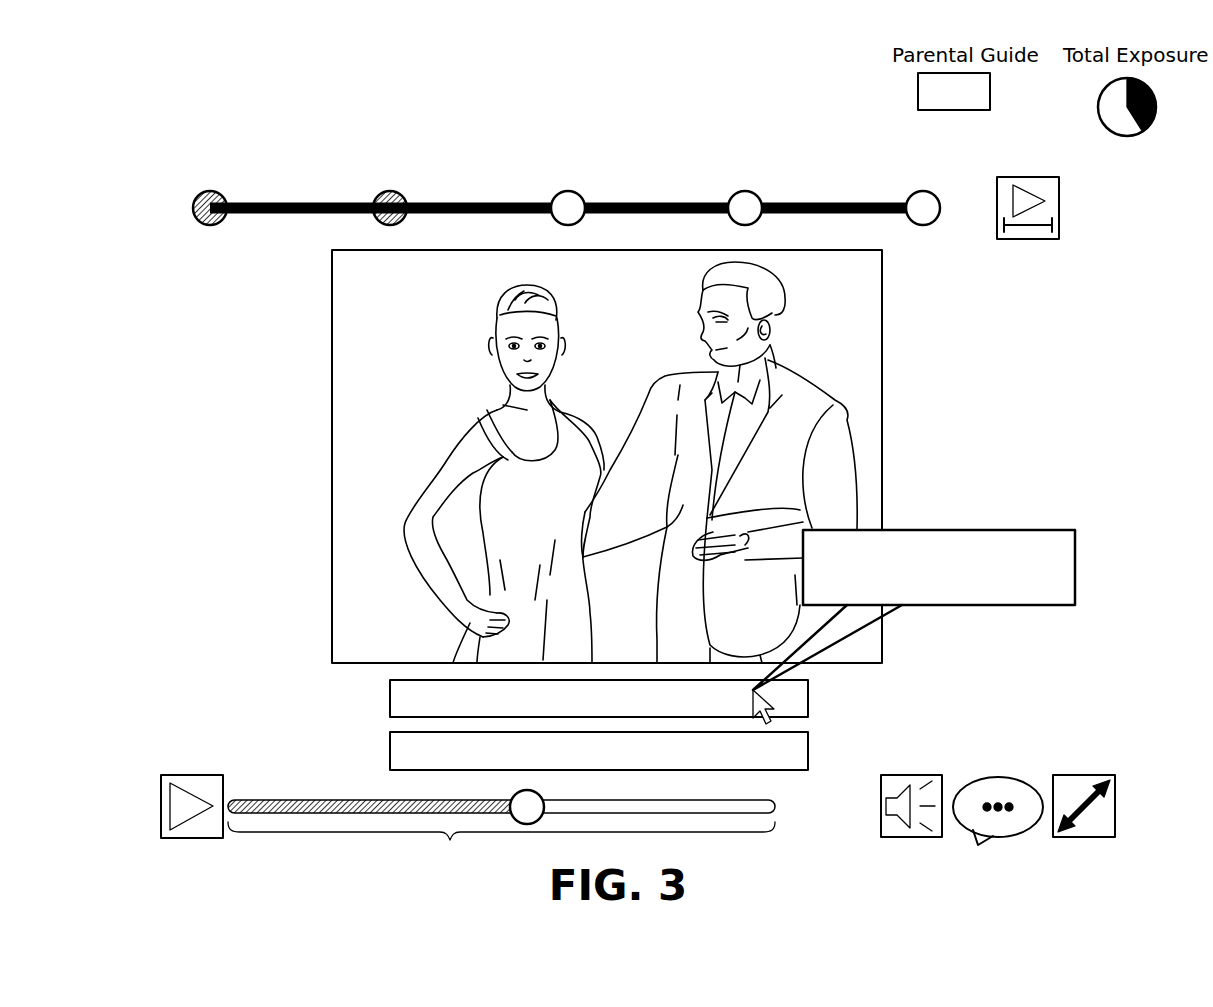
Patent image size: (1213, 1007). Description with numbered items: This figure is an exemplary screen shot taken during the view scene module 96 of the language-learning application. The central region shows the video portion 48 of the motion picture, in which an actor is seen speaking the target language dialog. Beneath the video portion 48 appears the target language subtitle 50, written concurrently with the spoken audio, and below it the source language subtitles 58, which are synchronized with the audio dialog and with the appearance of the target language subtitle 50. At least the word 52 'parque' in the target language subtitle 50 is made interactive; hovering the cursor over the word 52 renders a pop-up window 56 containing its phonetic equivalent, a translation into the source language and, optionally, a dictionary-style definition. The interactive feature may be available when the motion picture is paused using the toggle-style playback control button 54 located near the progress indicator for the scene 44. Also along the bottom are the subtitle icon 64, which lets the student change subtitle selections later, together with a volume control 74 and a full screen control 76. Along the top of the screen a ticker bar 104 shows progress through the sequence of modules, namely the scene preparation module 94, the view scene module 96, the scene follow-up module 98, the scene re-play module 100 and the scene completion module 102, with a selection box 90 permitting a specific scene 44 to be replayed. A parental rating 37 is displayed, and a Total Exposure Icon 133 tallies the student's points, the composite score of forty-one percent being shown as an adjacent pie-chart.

The parental rating 37 is at (918, 90).
The scene 44 is at (545, 827).
The video portion 48 is at (365, 340).
The target language subtitle 50 is at (390, 695).
The word 52 is at (752, 690).
The playback control button 54 is at (188, 775).
The pop-up window 56 is at (960, 530).
The source language subtitles 58 is at (390, 748).
The subtitle icon 64 is at (995, 777).
The volume control 74 is at (900, 837).
The full screen control 76 is at (1088, 837).
The selection box 90 is at (1059, 200).
The scene preparation module 94 is at (212, 191).
The view scene module 96 is at (390, 191).
The scene follow-up module 98 is at (568, 191).
The scene re-play module 100 is at (745, 191).
The scene completion module 102 is at (923, 191).
The ticker bar 104 is at (658, 202).
The Total Exposure Icon 133 is at (1147, 126).